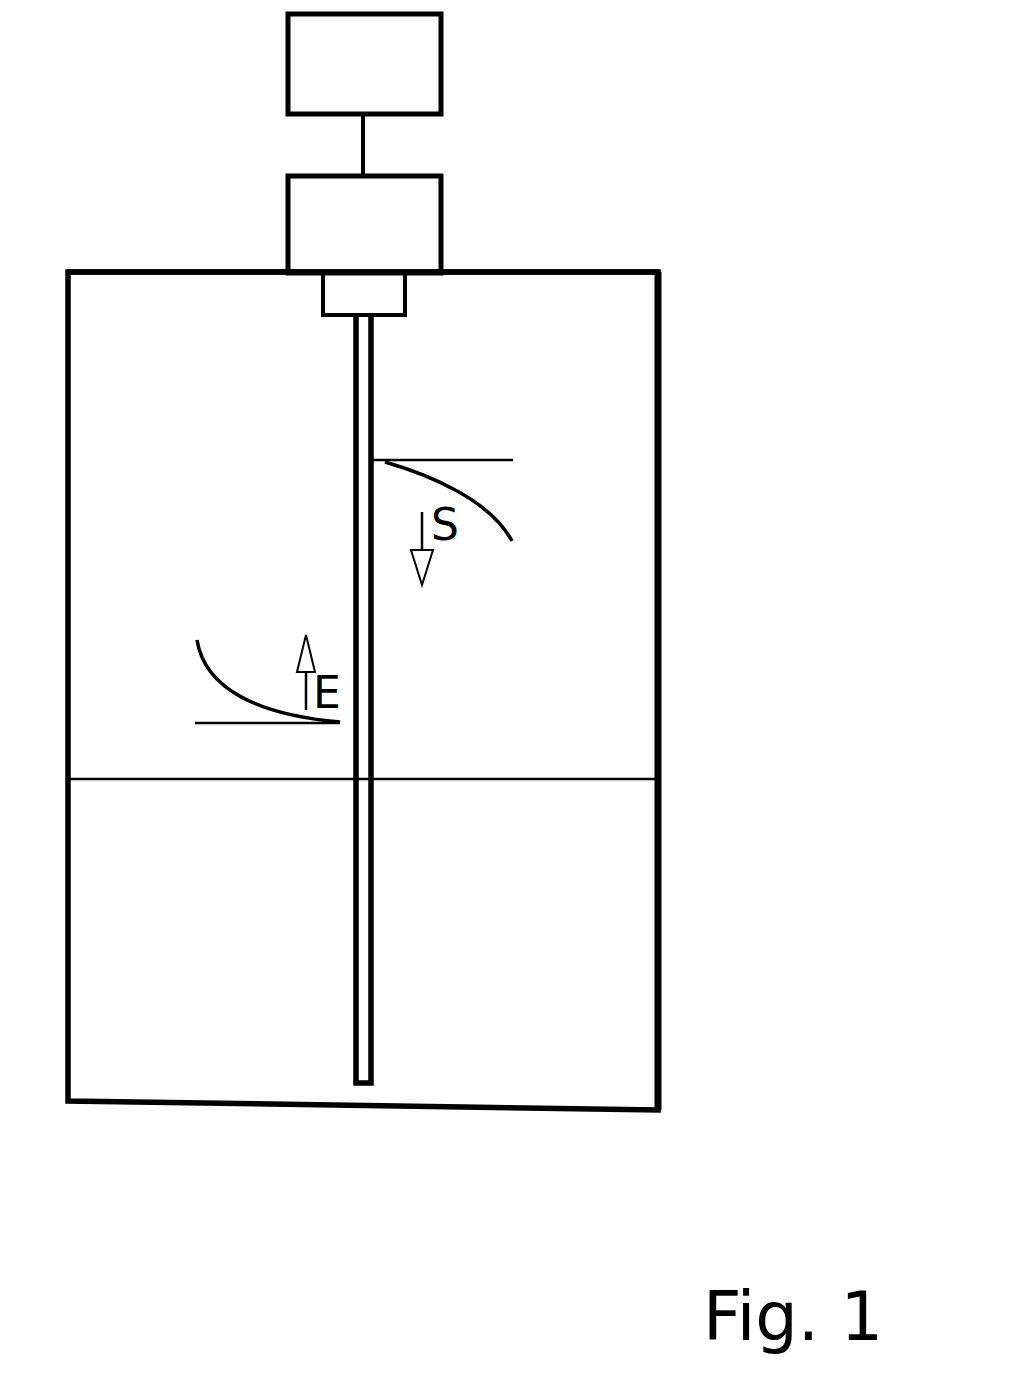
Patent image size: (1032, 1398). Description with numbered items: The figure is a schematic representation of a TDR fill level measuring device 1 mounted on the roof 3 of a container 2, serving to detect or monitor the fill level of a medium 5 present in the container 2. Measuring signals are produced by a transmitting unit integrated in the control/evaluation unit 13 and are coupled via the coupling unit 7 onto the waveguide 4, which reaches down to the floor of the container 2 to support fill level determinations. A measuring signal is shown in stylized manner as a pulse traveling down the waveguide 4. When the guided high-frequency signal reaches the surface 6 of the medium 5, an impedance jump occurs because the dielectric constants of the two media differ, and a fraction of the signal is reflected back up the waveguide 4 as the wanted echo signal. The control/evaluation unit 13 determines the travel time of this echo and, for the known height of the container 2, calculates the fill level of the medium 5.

The TDR fill level measuring device 1 is at (454, 341).
The container 2 is at (662, 490).
The roof 3 is at (135, 272).
The waveguide 4 is at (366, 413).
The medium 5 is at (610, 925).
The surface 6 is at (546, 778).
The coupling unit 7 is at (341, 247).
The control/evaluation unit 13 is at (390, 85).